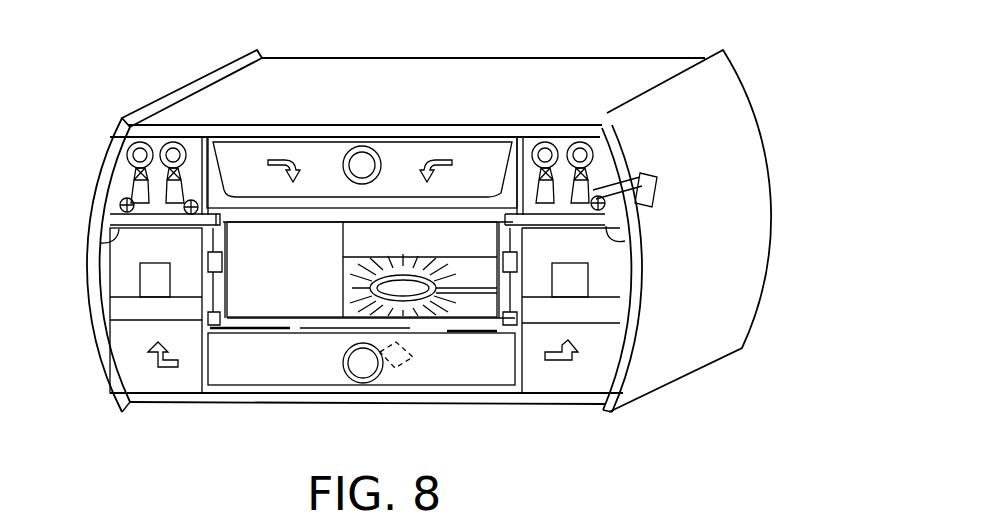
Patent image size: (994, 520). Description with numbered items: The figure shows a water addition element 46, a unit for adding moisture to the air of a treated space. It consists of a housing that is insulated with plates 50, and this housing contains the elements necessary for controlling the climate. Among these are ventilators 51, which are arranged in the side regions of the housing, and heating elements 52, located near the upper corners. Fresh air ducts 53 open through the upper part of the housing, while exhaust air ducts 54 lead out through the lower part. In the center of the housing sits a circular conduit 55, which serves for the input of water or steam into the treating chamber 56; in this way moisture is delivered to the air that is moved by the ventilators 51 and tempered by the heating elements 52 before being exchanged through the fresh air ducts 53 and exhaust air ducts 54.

The water addition element 46 is at (786, 88).
The plates 50 is at (548, 397).
The ventilators 51 is at (119, 307).
The heating elements 52 is at (100, 243).
The fresh air ducts 53 is at (382, 163).
The exhaust air ducts 54 is at (360, 368).
The circular conduit 55 is at (431, 312).
The treating chamber 56 is at (311, 300).